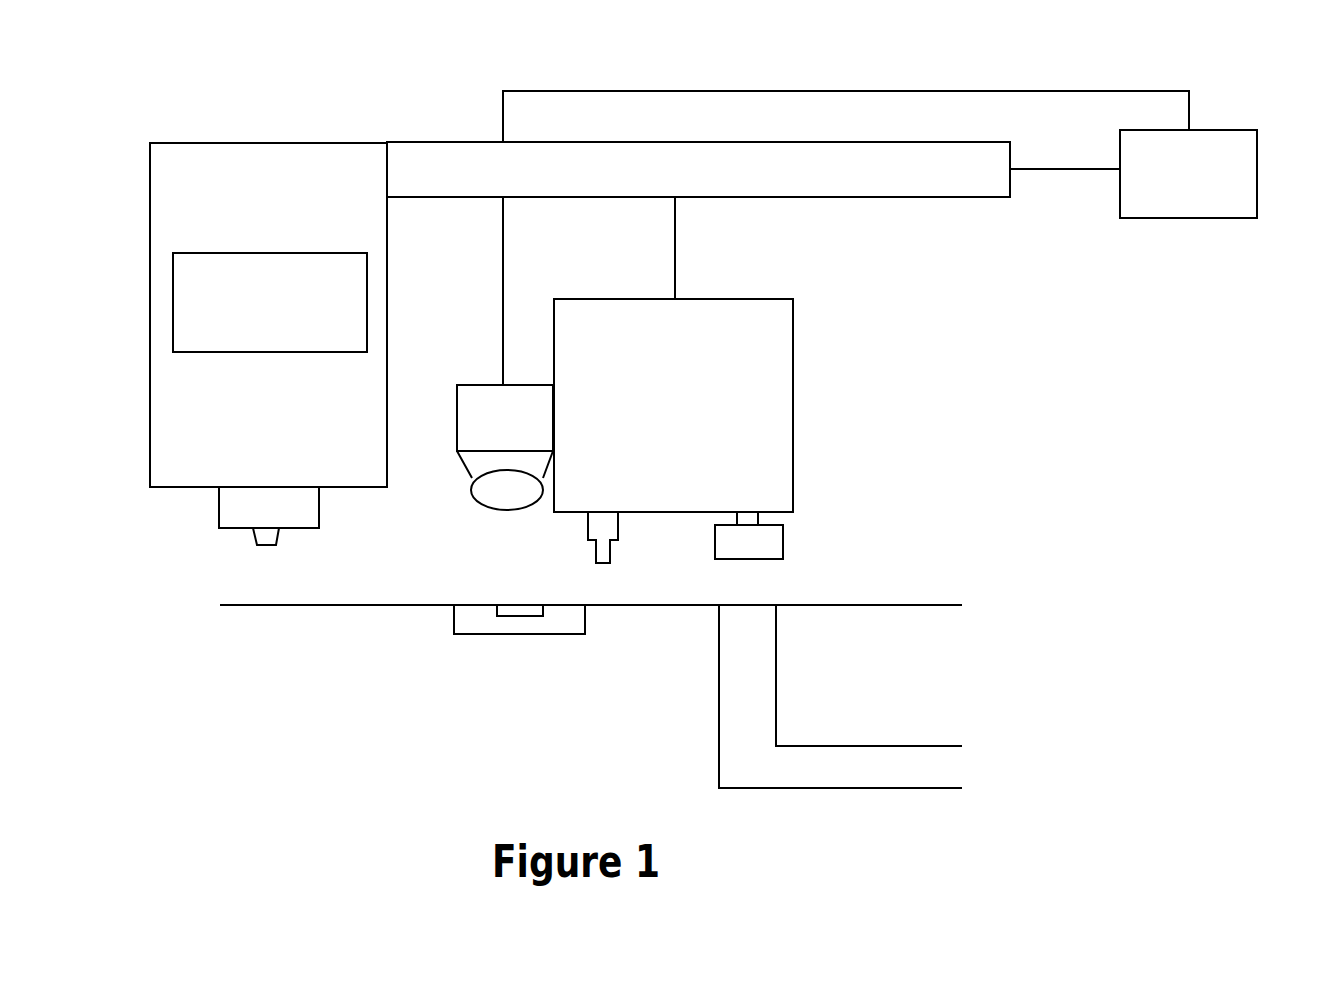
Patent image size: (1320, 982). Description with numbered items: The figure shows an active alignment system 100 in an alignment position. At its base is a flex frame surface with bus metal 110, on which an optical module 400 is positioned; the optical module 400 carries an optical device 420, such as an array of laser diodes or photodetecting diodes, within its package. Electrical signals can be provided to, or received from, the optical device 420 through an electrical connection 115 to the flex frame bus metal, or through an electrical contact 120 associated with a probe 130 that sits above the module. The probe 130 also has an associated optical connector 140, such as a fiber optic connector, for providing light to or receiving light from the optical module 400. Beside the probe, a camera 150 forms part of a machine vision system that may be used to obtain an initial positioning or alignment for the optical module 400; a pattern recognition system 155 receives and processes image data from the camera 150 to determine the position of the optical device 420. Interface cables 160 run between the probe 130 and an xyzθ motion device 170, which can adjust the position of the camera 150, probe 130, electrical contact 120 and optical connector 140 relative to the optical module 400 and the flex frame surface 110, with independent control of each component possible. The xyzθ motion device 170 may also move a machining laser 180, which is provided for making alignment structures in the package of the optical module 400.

The active alignment system 100 is at (246, 86).
The flex frame surface with bus metal 110 is at (907, 603).
The electrical connection to the flex frame bus metal 115 is at (919, 790).
The electrical contact 120 is at (588, 548).
The probe 130 is at (795, 376).
The optical connector 140 is at (784, 541).
The camera 150 is at (457, 399).
The pattern recognition system (PRS) 155 is at (1258, 153).
The interface cables 160 is at (677, 247).
The xyzθ motion device 170 is at (945, 198).
The machining laser 180 is at (150, 285).
The optical module 400 is at (454, 610).
The optical device 420 is at (518, 610).